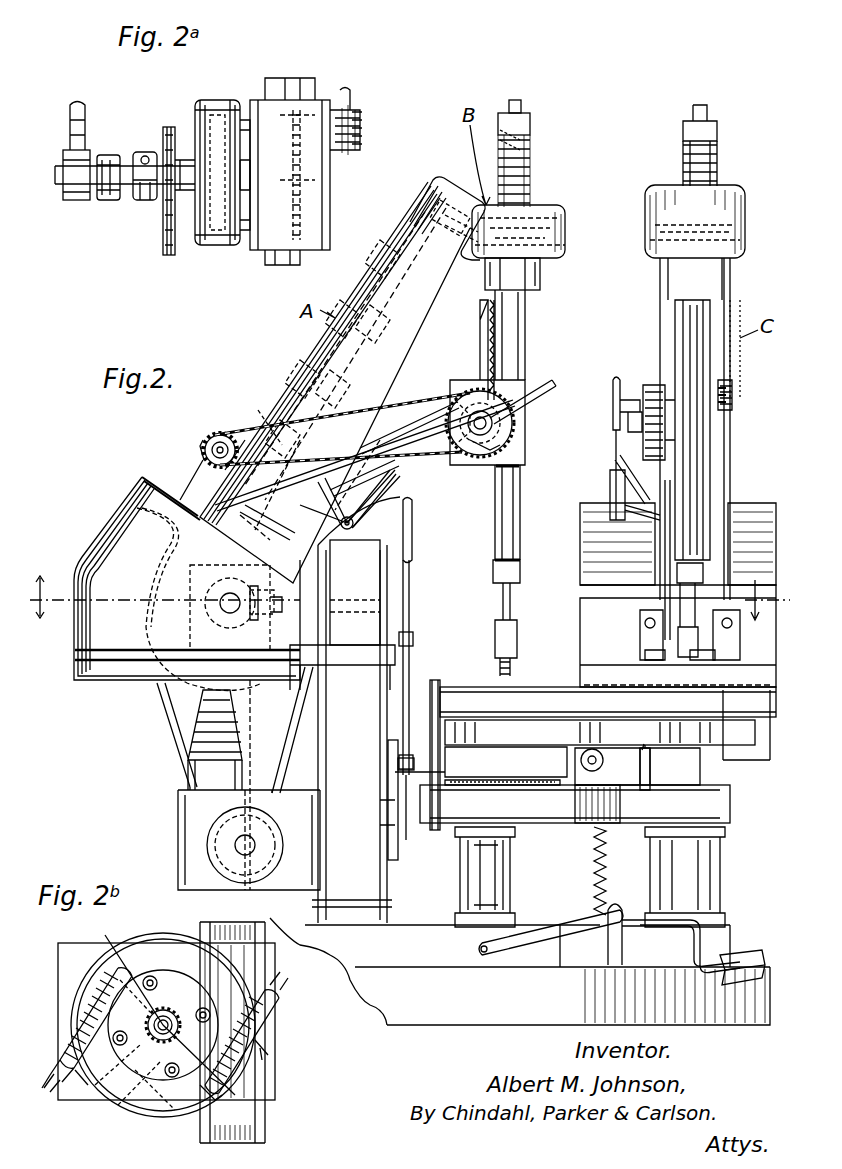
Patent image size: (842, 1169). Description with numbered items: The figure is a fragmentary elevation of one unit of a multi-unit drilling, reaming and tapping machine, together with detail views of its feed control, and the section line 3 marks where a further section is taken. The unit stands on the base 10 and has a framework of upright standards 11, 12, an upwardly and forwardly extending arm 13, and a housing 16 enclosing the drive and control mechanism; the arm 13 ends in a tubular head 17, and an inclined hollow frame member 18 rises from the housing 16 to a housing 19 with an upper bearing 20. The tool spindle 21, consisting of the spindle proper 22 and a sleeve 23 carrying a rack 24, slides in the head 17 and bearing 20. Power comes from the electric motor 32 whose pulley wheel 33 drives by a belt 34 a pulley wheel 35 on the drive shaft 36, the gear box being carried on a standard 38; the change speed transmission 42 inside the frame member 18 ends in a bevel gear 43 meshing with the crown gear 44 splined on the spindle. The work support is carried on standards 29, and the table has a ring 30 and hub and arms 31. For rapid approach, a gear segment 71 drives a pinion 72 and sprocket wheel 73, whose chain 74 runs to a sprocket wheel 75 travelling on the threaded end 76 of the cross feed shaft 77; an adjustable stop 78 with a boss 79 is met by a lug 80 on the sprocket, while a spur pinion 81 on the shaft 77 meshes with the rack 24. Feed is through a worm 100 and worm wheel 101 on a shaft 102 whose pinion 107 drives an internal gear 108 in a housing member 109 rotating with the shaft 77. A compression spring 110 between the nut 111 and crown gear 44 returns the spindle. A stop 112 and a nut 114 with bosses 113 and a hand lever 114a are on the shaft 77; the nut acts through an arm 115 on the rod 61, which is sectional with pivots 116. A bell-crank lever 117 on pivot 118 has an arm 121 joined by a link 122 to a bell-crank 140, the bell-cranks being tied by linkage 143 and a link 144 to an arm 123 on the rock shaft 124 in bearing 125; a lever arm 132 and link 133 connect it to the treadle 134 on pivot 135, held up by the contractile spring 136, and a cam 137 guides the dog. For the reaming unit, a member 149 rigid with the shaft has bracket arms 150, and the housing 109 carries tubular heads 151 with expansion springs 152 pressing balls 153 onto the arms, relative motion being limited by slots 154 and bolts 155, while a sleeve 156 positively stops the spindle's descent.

In FIG. 2, the section line 3- 3 is at (403, 598).
In FIG. 2, the base 10 is at (520, 971).
In FIG. 2, the upright supporting standard 11 is at (356, 710).
In FIG. 2, the upright supporting standard 12 is at (190, 795).
In FIG. 2, the arm 13 is at (342, 615).
In FIG. 2, the housing 16 is at (78, 632).
In FIG. 2, the tubular head 17 is at (515, 400).
In FIG. 2, the hollow frame member 18 is at (300, 370).
In FIG. 2, the housing 19 is at (486, 200).
In FIG. 2, the bearing 20 is at (541, 275).
In FIG. 2, the tool spindle 21 is at (525, 478).
In FIG. 2, the spindle proper 22 is at (521, 104).
In FIG. 2, the sleeve 23 is at (527, 320).
In FIG. 2B, the sleeve 23 is at (268, 930).
In FIG. 2, the rack 24 is at (488, 332).
In FIG. 2B, the rack 24 is at (200, 925).
In FIG. 2, the standards 29 is at (512, 865).
In FIG. 2, the annular member or ring 30 is at (680, 756).
In FIG. 2, the hub / radially extending arms 31 is at (728, 722).
In FIG. 2, the electric motor 32 is at (178, 822).
In FIG. 2, the pulley wheel 33 is at (252, 800).
In FIG. 2, the belt 34 is at (172, 736).
In FIG. 2, the pulley wheel 35 is at (140, 500).
In FIG. 2, the drive shaft 36 is at (222, 612).
In FIG. 2, the standard 38 is at (243, 735).
In FIG. 2, the change speed power transmission 42 is at (290, 398).
In FIG. 2, the bevel gear 43 is at (428, 180).
In FIG. 2, the bevel gear (crown gear) 44 is at (566, 243).
In FIG. 2, the rod 61 is at (250, 520).
In FIG. 2B, the rod 61 is at (95, 1090).
In FIG. 2, the gear segment 71 is at (215, 470).
In FIG. 2, the pinion 72 is at (210, 440).
In FIG. 2, the sprocket wheel 73 is at (205, 448).
In FIG. 2, the chain 74 is at (245, 430).
In FIG. 2, the sprocket wheel 75 is at (468, 455).
In FIG. 2, the threaded end 76 is at (455, 438).
In FIG. 2, the cross feed shaft 77 is at (668, 422).
In FIG. 2B, the cross feed shaft 77 is at (182, 1010).
In FIG. 2A, the adjustable stop 78 is at (138, 200).
In FIG. 2A, the boss 79 is at (166, 127).
In FIG. 2A, the lug 80 is at (168, 255).
In FIG. 2B, the spur pinion 81 is at (105, 1085).
In FIG. 2A, the worm 100 is at (362, 118).
In FIG. 2, the worm 100 is at (734, 395).
In FIG. 2A, the worm wheel 101 is at (352, 92).
In FIG. 2, the worm wheel 101 is at (734, 386).
In FIG. 2A, the shaft 102 is at (315, 112).
In FIG. 2A, the pinion 107 is at (240, 108).
In FIG. 2A, the internal gear 108 is at (215, 100).
In FIG. 2B, the housing member 109 is at (165, 1112).
In FIG. 2, the coiled compression spring 110 is at (531, 170).
In FIG. 2, the nut (stop collar) 111 is at (530, 124).
In FIG. 2A, the stop 112 is at (110, 155).
In FIG. 2A, the bosses 113 is at (88, 150).
In FIG. 2A, the nut 114 is at (62, 188).
In FIG. 2, the hand lever 114a is at (550, 385).
In FIG. 2, the arm 115 is at (440, 405).
In FIG. 2, the pivot 116 is at (455, 460).
In FIG. 2, the bell-crank lever 117 is at (382, 480).
In FIG. 2, the pivot 118 is at (347, 530).
In FIG. 2, the arm 121 is at (402, 530).
In FIG. 2, the link 122 is at (640, 598).
In FIG. 2, the arm 123 is at (390, 775).
In FIG. 2, the rock shaft 124 is at (446, 770).
In FIG. 2, the bearing 125 is at (597, 804).
In FIG. 2, the lever arm 132 is at (650, 770).
In FIG. 2, the link 133 is at (655, 810).
In FIG. 2, the treadle 134 is at (626, 930).
In FIG. 2, the pivot 135 is at (482, 958).
In FIG. 2, the contractile spring 136 is at (594, 870).
In FIG. 2, the cam 137 is at (358, 615).
In FIG. 2, the bell-crank 140 is at (415, 640).
In FIG. 2, the linkage 143 is at (540, 685).
In FIG. 2, the link 144 is at (432, 680).
In FIG. 2B, the member 149 is at (128, 1095).
In FIG. 2B, the bracket arms 150 is at (135, 948).
In FIG. 2B, the tubular heads 151 is at (52, 1032).
In FIG. 2B, the expansion spring 152 is at (272, 1040).
In FIG. 2B, the ball 153 is at (230, 1087).
In FIG. 2B, the slots 154 is at (50, 1085).
In FIG. 2B, the bolts 155 is at (85, 1090).
In FIG. 2, the sleeve 156 is at (531, 158).